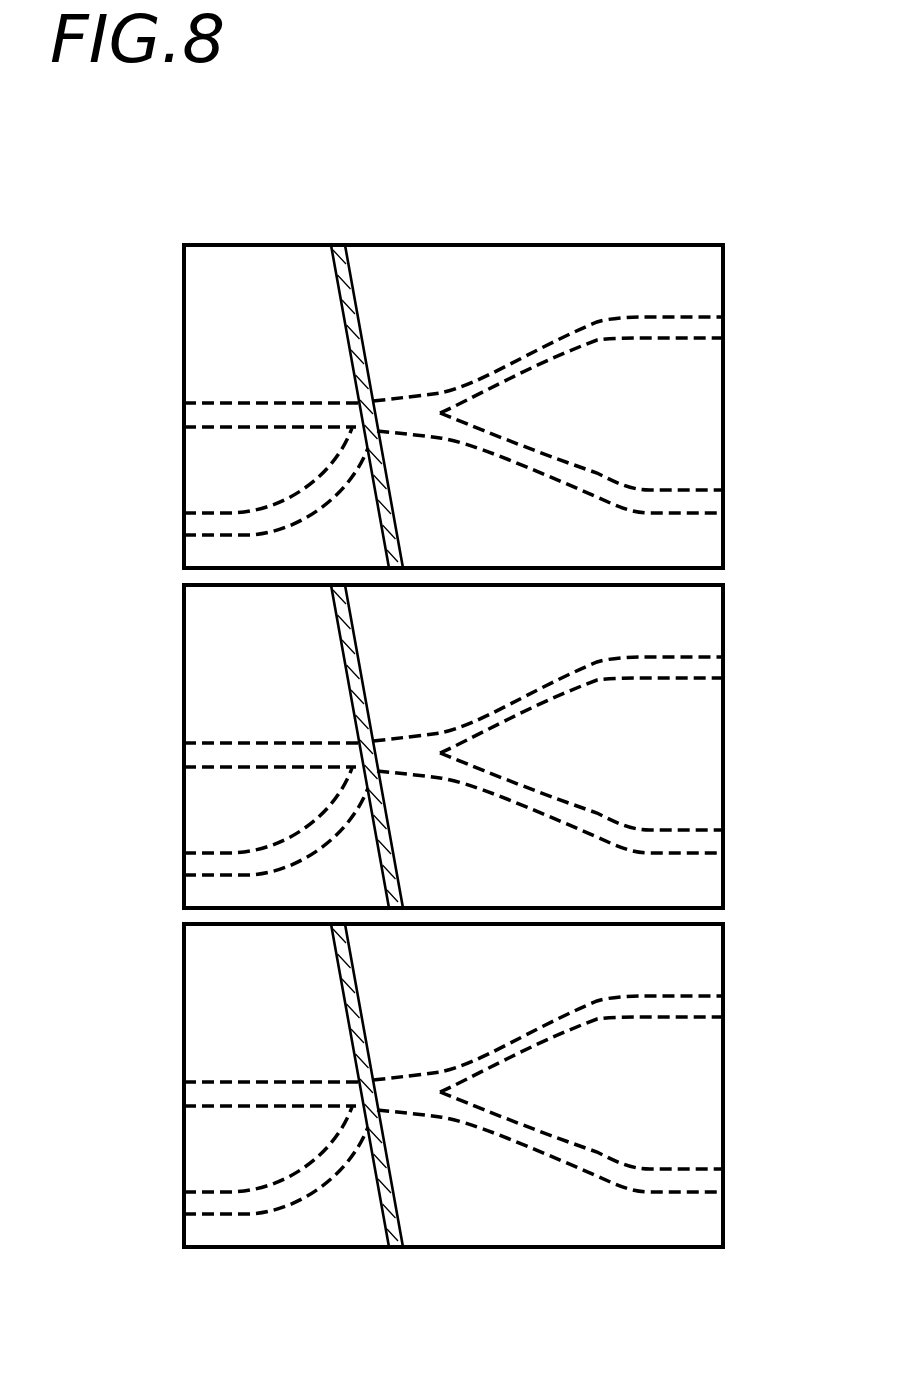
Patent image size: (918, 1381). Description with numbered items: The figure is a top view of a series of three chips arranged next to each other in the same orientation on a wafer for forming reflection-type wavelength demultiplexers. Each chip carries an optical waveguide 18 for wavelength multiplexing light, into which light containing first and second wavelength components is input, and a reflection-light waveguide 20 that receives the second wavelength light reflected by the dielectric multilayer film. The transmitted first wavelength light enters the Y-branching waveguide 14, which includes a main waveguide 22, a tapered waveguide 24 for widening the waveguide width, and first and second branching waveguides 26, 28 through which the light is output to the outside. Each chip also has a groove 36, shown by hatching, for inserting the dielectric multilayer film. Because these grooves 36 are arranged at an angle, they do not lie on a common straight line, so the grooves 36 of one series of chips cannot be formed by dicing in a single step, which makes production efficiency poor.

The Y-branching waveguide 14 is at (767, 175).
The optical waveguide for wavelength multiplexing light 18 is at (222, 398).
The reflection-light waveguide 20 is at (217, 535).
The main waveguide 22 is at (385, 397).
The tapered waveguide 24 is at (437, 392).
The first branching waveguide 26 is at (568, 322).
The second branching waveguide 28 is at (675, 487).
The groove 36 is at (340, 245).